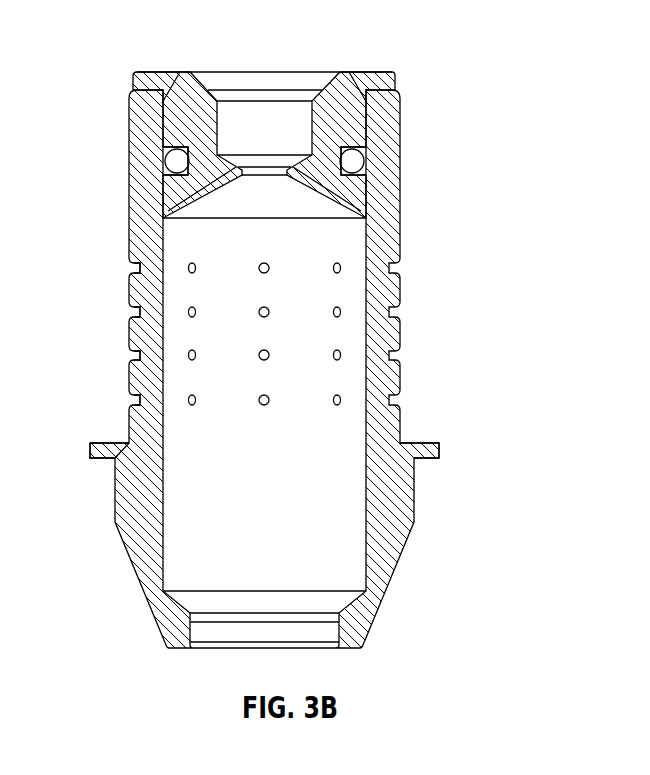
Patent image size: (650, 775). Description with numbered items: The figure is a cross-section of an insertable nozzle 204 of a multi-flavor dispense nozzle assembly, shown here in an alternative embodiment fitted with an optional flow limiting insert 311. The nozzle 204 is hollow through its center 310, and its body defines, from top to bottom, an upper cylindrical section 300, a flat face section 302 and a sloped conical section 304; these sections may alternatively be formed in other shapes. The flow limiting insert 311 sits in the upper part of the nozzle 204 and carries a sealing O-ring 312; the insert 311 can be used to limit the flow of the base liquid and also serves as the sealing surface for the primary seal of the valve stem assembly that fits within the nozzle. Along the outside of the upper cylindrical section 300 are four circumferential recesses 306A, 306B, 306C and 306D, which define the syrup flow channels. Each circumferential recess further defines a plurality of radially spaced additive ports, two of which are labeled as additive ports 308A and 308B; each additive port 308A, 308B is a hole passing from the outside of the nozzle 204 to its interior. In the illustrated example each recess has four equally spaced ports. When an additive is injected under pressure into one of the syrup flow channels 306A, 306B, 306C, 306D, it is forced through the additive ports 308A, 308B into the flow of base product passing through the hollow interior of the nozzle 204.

The insertable nozzle 204 is at (113, 38).
The upper cylindrical section 300 is at (388, 96).
The flat face section 302 is at (437, 445).
The sloped conical section 304 is at (368, 627).
The circumferential recess 306A is at (140, 268).
The circumferential recess 306B is at (140, 312).
The circumferential recess 306C is at (140, 356).
The circumferential recess 306D is at (140, 400).
The additive port 308A is at (341, 398).
The additive port 308B is at (341, 353).
The center 310 is at (260, 117).
The flow limiting insert 311 is at (369, 96).
The sealing O-ring 312 is at (358, 163).